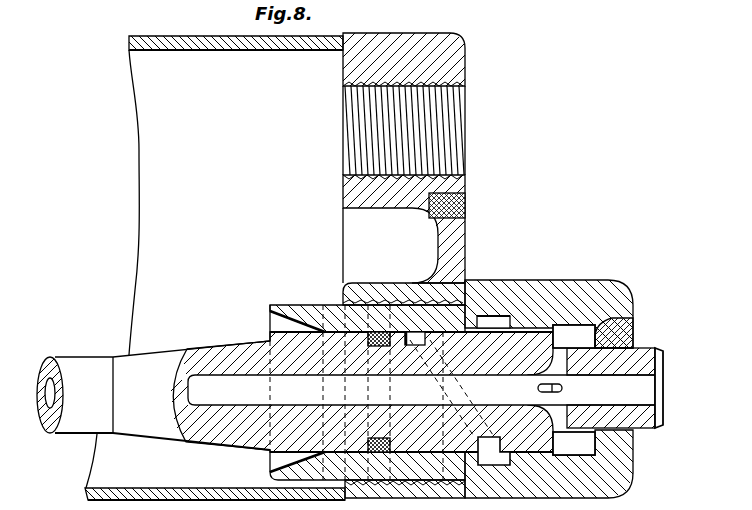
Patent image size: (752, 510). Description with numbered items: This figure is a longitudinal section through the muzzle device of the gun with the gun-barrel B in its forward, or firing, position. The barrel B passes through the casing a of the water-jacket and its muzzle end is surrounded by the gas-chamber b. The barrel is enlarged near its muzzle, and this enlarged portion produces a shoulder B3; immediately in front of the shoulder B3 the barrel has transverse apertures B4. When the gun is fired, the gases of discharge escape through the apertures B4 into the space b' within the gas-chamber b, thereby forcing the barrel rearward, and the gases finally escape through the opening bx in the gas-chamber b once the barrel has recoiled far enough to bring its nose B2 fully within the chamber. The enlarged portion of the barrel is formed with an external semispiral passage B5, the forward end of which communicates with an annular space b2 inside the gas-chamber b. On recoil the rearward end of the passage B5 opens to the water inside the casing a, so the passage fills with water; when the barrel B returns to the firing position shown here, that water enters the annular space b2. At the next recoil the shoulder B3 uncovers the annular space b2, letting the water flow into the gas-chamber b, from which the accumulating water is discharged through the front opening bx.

The casing of the water-jacket a is at (215, 268).
The gas-chamber b is at (488, 271).
The opening in the gas-chamber bx is at (624, 334).
The space in the gas-chamber b' is at (574, 444).
The annular space b2 is at (494, 451).
The gun-barrel B is at (346, 392).
The nose of the barrel B2 is at (625, 388).
The shoulder B3 is at (553, 337).
The transverse apertures B4 is at (562, 388).
The external semispiral passage B5 is at (403, 300).